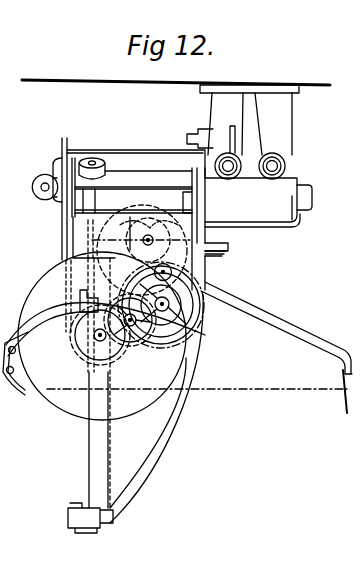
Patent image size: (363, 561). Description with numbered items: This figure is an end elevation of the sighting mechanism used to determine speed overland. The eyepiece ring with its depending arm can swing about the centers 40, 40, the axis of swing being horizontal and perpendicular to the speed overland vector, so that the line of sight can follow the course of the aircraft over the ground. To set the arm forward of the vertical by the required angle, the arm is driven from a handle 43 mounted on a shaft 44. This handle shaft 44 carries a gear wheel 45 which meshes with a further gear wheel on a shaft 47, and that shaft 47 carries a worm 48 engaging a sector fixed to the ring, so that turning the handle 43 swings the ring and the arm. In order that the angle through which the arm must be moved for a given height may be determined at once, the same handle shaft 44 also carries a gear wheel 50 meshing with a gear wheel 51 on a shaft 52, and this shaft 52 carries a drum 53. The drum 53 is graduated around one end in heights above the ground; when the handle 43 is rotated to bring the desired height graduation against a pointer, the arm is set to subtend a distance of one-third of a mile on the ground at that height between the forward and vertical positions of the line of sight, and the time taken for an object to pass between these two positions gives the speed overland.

The centers 40 is at (90, 533).
The handle 43 is at (205, 270).
The shaft 44 is at (205, 336).
The gear wheel 45 is at (148, 236).
The shaft 47 is at (232, 237).
The worm 48 is at (234, 250).
The gear wheel 50 is at (202, 314).
The gear wheel 51 is at (80, 354).
The shaft 52 is at (115, 348).
The drum 53 is at (122, 412).